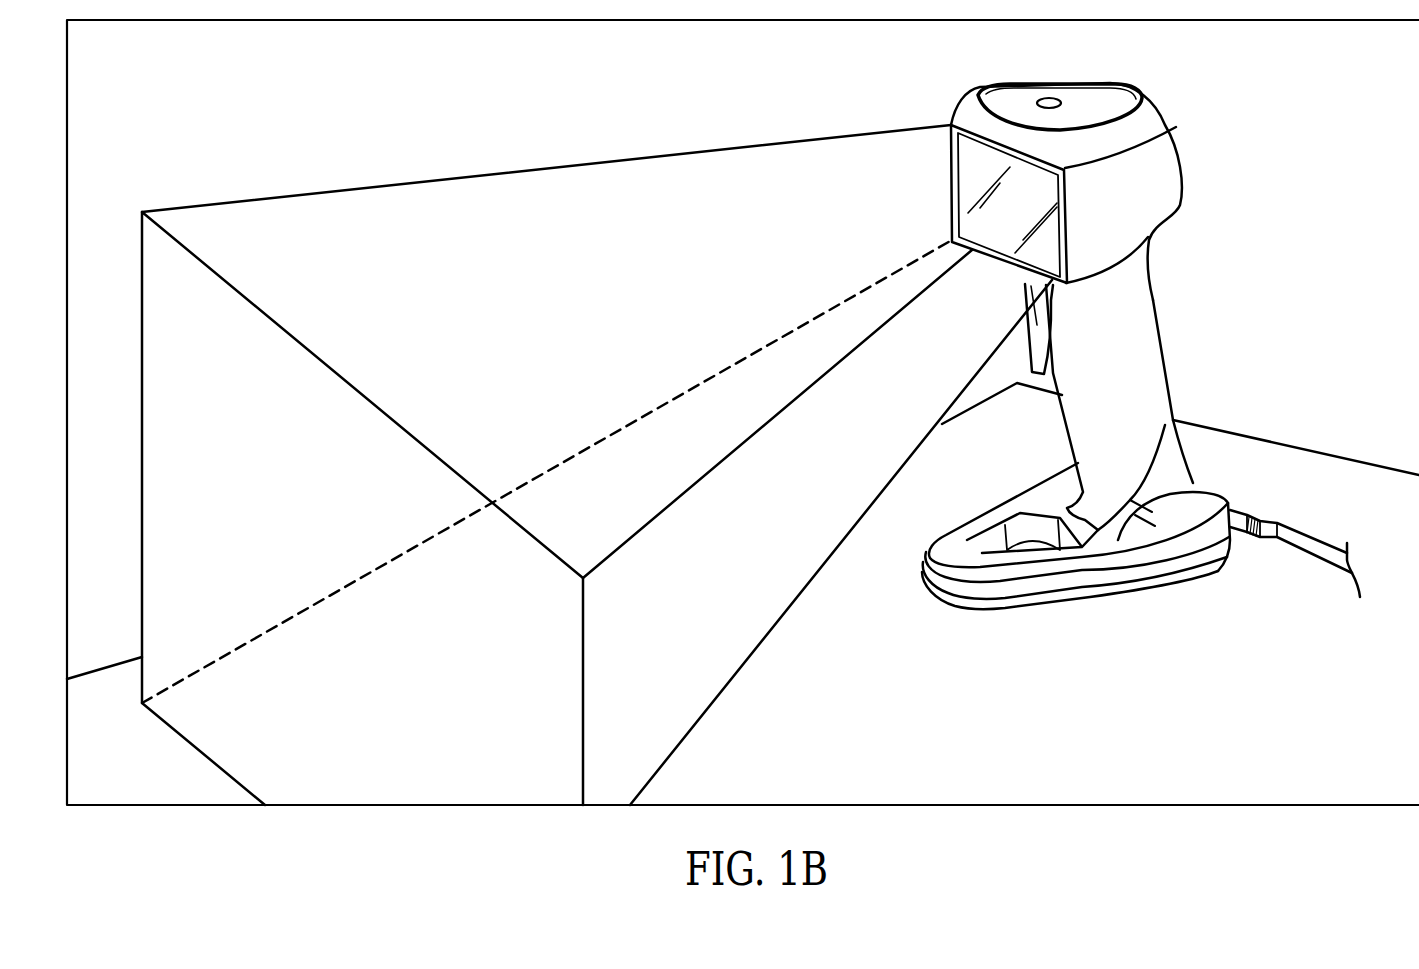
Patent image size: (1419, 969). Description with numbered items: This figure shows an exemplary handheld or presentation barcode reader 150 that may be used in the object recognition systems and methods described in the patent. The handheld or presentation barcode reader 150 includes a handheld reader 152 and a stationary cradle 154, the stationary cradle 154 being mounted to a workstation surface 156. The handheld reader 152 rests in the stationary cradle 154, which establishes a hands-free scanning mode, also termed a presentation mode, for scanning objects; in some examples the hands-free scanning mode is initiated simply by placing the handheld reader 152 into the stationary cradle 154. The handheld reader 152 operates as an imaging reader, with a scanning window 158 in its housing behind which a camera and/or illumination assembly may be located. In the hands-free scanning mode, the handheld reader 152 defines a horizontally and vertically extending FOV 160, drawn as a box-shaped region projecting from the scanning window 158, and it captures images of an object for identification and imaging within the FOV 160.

The handheld or presentation barcode reader 150 is at (1122, 350).
The handheld reader 152 is at (1183, 155).
The stationary cradle 154 is at (1150, 548).
The workstation surface 156 is at (1290, 460).
The scanning window 158 is at (968, 183).
The FOV 160 is at (523, 172).